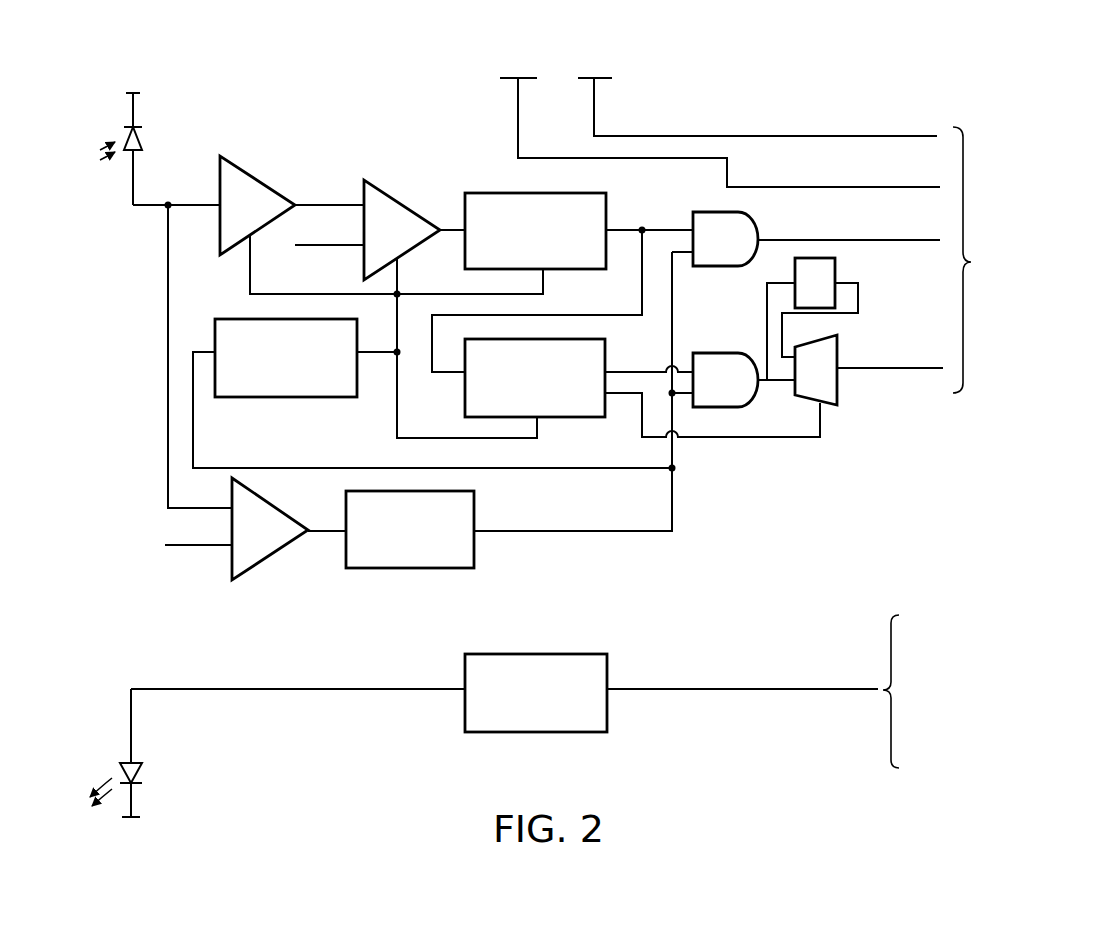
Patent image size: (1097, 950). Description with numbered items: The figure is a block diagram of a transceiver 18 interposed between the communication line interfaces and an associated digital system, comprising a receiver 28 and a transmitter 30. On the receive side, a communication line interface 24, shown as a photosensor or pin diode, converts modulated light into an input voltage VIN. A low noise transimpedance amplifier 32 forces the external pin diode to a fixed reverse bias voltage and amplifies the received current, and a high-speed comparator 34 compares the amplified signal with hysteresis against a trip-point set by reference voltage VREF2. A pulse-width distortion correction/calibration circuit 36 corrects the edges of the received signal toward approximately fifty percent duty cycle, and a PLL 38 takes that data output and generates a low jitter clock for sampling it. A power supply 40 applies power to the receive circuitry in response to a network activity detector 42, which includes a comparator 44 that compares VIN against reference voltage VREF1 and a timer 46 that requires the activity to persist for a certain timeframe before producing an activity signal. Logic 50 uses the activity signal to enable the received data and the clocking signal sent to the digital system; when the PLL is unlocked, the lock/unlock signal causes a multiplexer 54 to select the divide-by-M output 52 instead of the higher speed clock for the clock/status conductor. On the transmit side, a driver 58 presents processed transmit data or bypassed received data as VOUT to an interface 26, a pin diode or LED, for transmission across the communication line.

The transceiver 18 is at (800, 43).
The communication line interface 24 is at (160, 130).
The interface 26 is at (158, 772).
The receiver 28 is at (130, 378).
The transmitter 30 is at (138, 650).
The low noise transimpedance amplifier 32 is at (247, 169).
The high-speed comparator 34 is at (393, 195).
The pulse-width distortion correction/calibration circuit 36 is at (607, 215).
The PLL 38 is at (612, 357).
The power supply 40 is at (226, 318).
The network activity detector 42 is at (424, 437).
The comparator 44 is at (285, 512).
The timer 46 is at (477, 508).
The logic 50 is at (732, 275).
The divide-by-M output 52 is at (838, 272).
The multiplexer 54 is at (840, 384).
The driver 58 is at (532, 653).